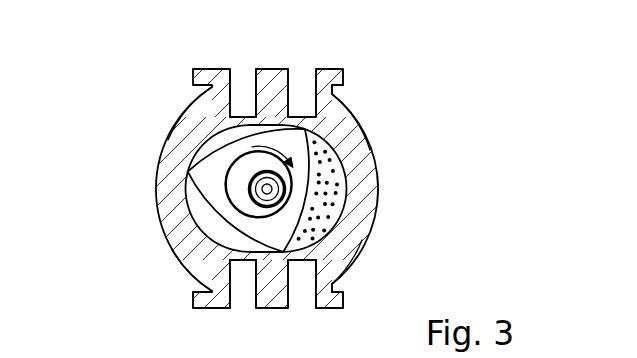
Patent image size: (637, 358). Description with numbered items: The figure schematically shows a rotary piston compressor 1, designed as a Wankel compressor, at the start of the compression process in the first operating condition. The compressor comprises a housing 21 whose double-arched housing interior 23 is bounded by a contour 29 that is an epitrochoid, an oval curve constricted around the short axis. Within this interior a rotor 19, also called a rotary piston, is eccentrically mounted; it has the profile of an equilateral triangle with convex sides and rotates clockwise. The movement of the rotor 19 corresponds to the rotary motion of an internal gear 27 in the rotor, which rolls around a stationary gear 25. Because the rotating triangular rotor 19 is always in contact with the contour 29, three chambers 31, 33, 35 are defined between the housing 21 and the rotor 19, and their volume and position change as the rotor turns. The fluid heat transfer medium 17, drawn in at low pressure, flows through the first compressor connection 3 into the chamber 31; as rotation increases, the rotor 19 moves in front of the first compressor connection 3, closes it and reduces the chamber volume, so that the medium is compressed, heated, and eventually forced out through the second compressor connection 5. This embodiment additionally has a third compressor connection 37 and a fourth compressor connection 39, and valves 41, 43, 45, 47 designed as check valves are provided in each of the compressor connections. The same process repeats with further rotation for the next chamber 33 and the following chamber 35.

The rotary piston compressor 1 is at (373, 99).
The first compressor connection 3 is at (300, 86).
The second compressor connection 5 is at (303, 288).
The fluid heat transfer medium 17 is at (335, 152).
The rotor 19 is at (184, 160).
The housing 21 is at (343, 127).
The housing interior 23 is at (192, 165).
The stationary gear 25 is at (248, 202).
The internal gear 27 is at (252, 197).
The contour 29 is at (358, 182).
The chamber 31 is at (347, 208).
The chamber 33 is at (195, 172).
The chamber 35 is at (213, 227).
The third compressor connection 37 is at (246, 89).
The fourth compressor connection 39 is at (242, 288).
The valve 41 is at (334, 100).
The valve 43 is at (345, 269).
The valve 45 is at (243, 117).
The valve 47 is at (187, 258).